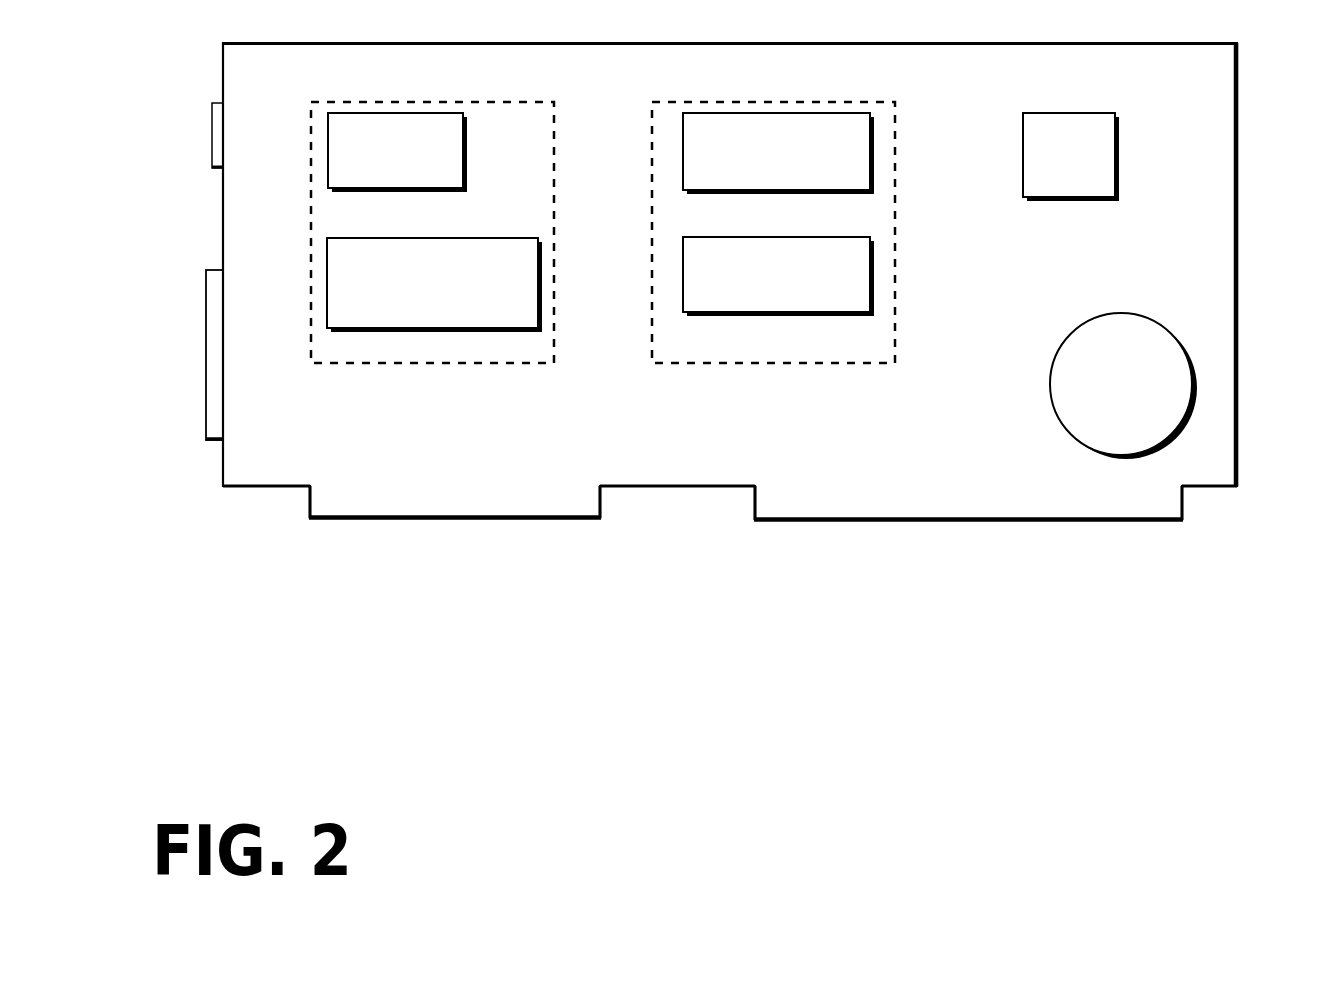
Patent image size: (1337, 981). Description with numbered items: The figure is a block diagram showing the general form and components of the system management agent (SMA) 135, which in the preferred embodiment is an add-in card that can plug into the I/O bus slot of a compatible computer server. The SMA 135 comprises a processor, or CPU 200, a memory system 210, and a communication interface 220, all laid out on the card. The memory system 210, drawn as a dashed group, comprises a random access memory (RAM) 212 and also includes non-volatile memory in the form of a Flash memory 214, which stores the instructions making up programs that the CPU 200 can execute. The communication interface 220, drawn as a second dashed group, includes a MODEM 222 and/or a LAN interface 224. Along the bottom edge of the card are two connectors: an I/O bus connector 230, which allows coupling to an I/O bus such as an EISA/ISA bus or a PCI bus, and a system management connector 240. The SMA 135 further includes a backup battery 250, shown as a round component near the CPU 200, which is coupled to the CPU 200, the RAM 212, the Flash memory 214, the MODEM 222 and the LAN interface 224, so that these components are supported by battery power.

The system management agent 135 is at (1237, 177).
The CPU 200 is at (1088, 182).
The memory system 210 is at (847, 363).
The random access memory 212 is at (817, 164).
The Flash memory 214 is at (850, 297).
The communication interface 220 is at (507, 363).
The MODEM 222 is at (415, 177).
The LAN interface 224 is at (450, 307).
The I/O bus connector 230 is at (1117, 552).
The system management connector 240 is at (543, 584).
The backup battery 250 is at (1142, 434).